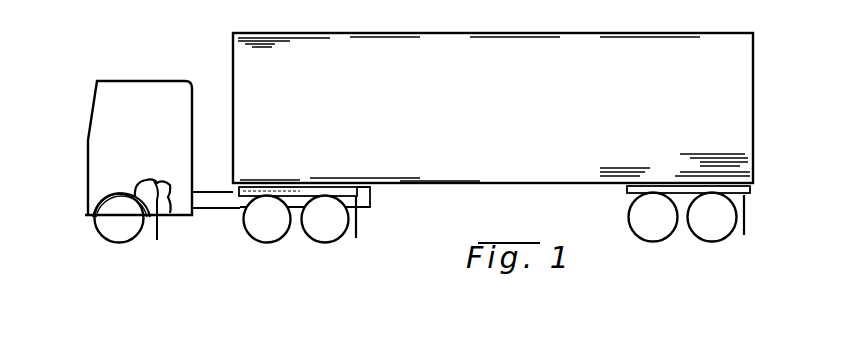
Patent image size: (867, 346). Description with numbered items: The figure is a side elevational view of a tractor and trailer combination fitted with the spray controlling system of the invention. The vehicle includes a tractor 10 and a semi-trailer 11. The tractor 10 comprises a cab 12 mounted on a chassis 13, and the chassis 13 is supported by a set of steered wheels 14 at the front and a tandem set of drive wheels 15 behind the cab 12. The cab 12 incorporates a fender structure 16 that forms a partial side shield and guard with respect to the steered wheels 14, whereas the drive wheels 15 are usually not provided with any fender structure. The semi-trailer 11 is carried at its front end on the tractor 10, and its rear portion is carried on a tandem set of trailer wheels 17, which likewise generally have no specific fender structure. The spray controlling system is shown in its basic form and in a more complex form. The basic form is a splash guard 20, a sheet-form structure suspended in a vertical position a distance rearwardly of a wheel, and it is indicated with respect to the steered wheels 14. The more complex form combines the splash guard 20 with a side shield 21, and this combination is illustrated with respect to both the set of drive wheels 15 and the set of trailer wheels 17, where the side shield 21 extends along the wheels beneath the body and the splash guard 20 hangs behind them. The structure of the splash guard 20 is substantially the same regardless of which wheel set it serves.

The tractor 10 is at (138, 149).
The semi-trailer 11 is at (458, 33).
The cab 12 is at (120, 80).
The chassis 13 is at (227, 200).
The steered wheels 14 is at (100, 232).
The drive wheels 15 is at (308, 240).
The fender structure 16 is at (138, 173).
The trailer wheels 17 is at (688, 232).
The splash guard 20 is at (365, 221).
The side shield 21 is at (281, 181).